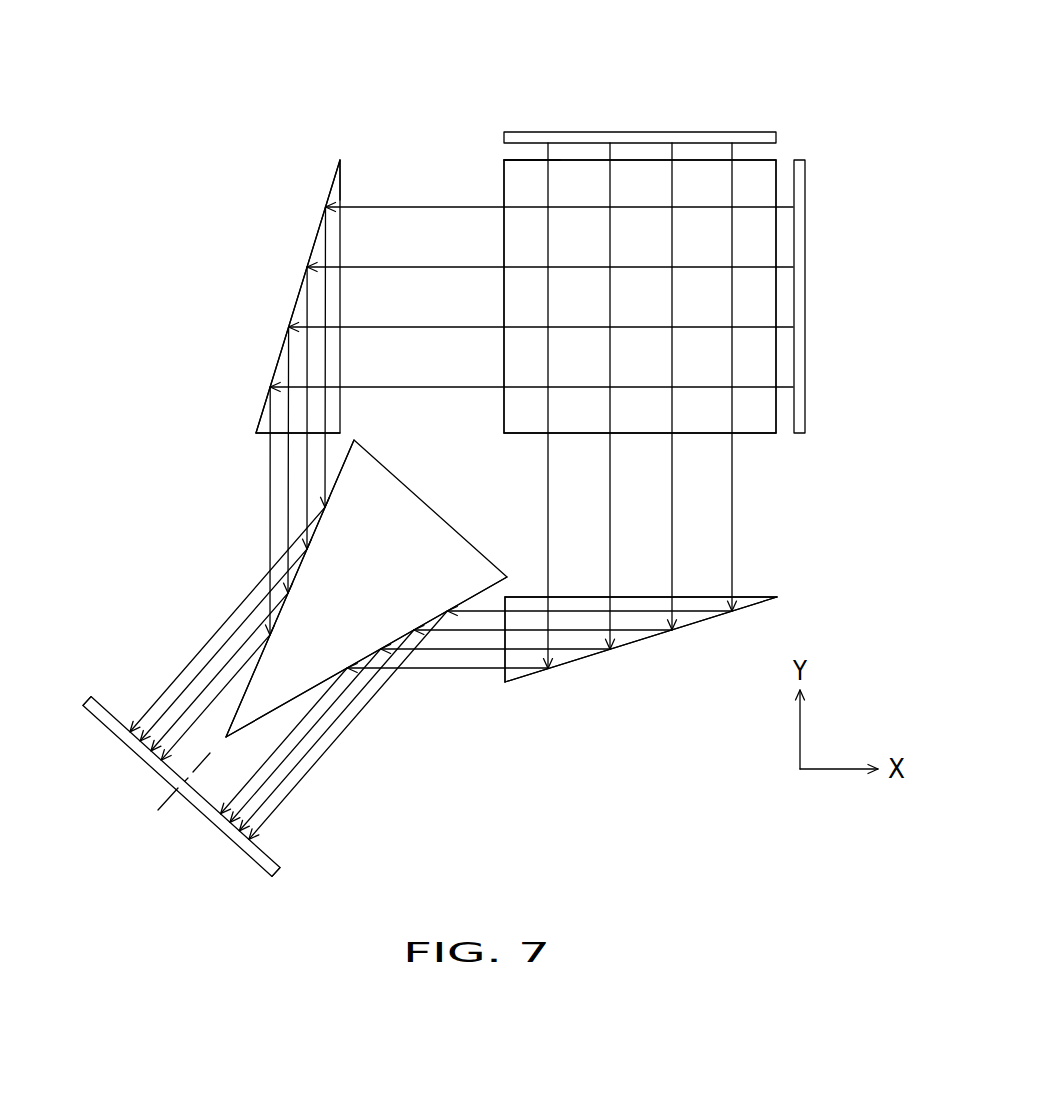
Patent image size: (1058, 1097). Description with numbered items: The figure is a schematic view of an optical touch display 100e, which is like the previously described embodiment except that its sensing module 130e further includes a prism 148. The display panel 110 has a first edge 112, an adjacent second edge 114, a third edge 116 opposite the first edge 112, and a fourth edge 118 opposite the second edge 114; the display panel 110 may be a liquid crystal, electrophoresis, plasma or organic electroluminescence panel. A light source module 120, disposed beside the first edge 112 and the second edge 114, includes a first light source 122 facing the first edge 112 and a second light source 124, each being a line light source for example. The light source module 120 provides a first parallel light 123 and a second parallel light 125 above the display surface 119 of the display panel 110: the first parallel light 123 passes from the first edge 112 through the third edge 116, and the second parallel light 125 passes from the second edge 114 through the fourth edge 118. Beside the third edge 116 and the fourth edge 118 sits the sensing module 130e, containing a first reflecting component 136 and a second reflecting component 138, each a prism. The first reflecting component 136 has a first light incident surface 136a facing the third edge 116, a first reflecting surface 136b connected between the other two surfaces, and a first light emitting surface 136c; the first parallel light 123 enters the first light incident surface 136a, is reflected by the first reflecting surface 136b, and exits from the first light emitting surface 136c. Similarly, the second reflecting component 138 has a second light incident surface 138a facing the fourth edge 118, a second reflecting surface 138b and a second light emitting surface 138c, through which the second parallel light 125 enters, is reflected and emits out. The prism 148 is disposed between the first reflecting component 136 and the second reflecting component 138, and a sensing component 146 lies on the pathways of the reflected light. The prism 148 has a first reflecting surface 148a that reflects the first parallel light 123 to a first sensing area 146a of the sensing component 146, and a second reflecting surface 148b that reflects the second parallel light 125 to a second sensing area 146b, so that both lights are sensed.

The optical touch display 100e is at (658, 792).
The display panel 110 is at (772, 425).
The first edge 112 is at (527, 158).
The second edge 114 is at (778, 190).
The third edge 116 is at (769, 434).
The fourth edge 118 is at (504, 170).
The display surface 119 is at (766, 407).
The light source module 120 is at (723, 273).
The first light source 122 is at (777, 136).
The first parallel light 123 is at (549, 153).
The second light source 124 is at (801, 176).
The second parallel light 125 is at (787, 208).
The sensing module 130e is at (117, 463).
The first reflecting component 136 is at (525, 603).
The first light incident surface 136a is at (763, 595).
The first reflecting surface 136b is at (638, 643).
The first light emitting surface 136c is at (509, 657).
The second reflecting component 138 is at (263, 436).
The second light incident surface 138a is at (344, 172).
The second reflecting surface 138b is at (313, 250).
The second light emitting surface 138c is at (280, 431).
The sensing component 146 is at (108, 718).
The first sensing area 146a is at (278, 840).
The second sensing area 146b is at (103, 692).
The prism 148 is at (317, 564).
The first reflecting surface 148a is at (259, 723).
The second reflecting surface 148b is at (240, 700).